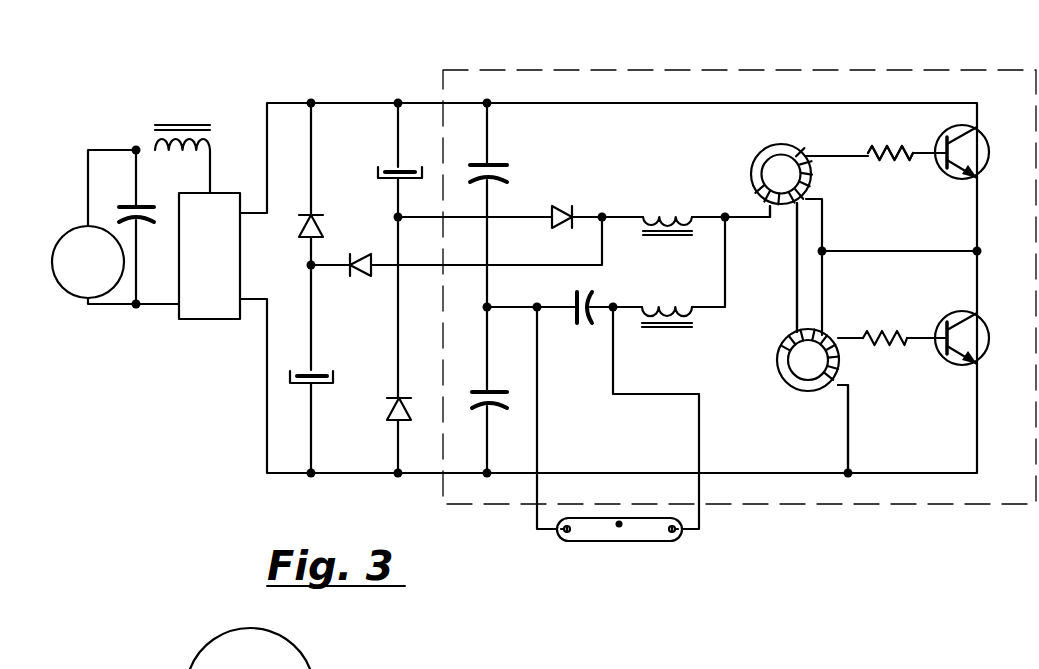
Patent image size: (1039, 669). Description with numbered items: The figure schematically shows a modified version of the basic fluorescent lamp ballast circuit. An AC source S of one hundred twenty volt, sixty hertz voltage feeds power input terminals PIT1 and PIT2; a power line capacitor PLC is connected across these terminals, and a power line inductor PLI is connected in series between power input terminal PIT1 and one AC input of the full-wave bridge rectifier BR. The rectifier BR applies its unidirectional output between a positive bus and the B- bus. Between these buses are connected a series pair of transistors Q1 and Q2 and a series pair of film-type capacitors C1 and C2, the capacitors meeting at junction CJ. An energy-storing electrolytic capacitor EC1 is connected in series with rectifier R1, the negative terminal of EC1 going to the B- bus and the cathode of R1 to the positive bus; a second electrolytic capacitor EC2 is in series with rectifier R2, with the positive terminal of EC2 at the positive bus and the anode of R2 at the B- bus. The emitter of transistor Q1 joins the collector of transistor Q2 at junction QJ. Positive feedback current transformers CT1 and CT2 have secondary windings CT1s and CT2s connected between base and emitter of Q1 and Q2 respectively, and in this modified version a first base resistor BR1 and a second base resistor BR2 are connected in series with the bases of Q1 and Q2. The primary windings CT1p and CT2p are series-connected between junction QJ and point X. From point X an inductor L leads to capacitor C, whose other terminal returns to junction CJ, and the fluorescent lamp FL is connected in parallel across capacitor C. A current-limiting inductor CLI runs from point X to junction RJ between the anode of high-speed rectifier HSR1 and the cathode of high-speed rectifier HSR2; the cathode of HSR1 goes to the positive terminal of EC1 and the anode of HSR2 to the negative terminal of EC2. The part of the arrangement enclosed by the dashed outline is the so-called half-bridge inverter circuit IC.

The source S is at (88, 262).
The full-wave bridge rectifier BR is at (209, 256).
The power input terminal PIT1 is at (135, 146).
The power input terminal PIT2 is at (136, 309).
The power line inductor PLI is at (182, 124).
The power line capacitor PLC is at (142, 203).
The B− bus B- is at (283, 478).
The rectifier R1 is at (305, 212).
The rectifier R2 is at (397, 395).
The high-speed rectifier HSR1 is at (362, 275).
The high-speed rectifier HSR2 is at (562, 205).
The energy-storing electrolytic capacitor EC1 is at (335, 381).
The energy-storing electrolytic capacitor EC2 is at (377, 173).
The film-type capacitor C1 is at (498, 163).
The film-type capacitor C2 is at (502, 388).
The junction CJ is at (490, 305).
The capacitor C is at (575, 323).
The inductor L is at (667, 328).
The current-limiting inductor CLI is at (672, 213).
The junction RJ is at (604, 219).
The point X is at (723, 212).
The half-bridge inverter circuit IC is at (747, 68).
The positive feedback current transformer CT1 is at (758, 150).
The secondary winding CT1s is at (818, 177).
The primary winding CT1p is at (783, 207).
The positive feedback current transformer CT2 is at (798, 402).
The secondary winding CT2s is at (843, 365).
The primary winding CT2p is at (810, 327).
The first base resistor BR1 is at (905, 160).
The second base resistor BR2 is at (877, 335).
The transistor Q1 is at (988, 142).
The transistor Q2 is at (987, 350).
The junction QJ is at (980, 248).
The fluorescent lamp FL is at (617, 542).